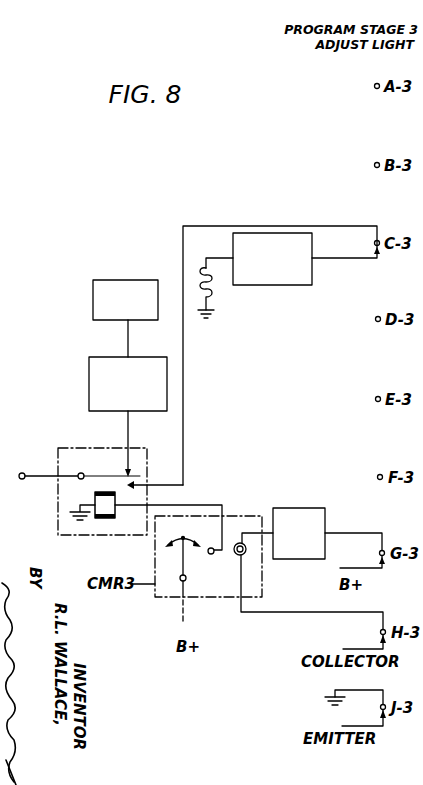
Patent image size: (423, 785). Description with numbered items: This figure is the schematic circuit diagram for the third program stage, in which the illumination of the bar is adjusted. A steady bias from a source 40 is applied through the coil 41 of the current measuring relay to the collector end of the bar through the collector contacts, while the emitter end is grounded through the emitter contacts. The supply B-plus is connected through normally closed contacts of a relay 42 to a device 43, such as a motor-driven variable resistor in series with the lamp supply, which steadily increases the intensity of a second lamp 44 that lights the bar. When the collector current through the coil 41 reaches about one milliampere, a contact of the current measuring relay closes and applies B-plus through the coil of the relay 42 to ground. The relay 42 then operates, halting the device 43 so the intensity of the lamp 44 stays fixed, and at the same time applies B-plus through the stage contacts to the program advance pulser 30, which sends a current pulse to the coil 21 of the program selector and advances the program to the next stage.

The second lamp 44 is at (126, 280).
The device which steadily increases the intensity of the lamp 43 is at (150, 357).
The relay 42 is at (70, 448).
The coil of CMR3 41 is at (238, 542).
The source of steady bias 40 is at (305, 508).
The program advance pulser 30 is at (296, 285).
The coil of the program selector 21 is at (212, 285).